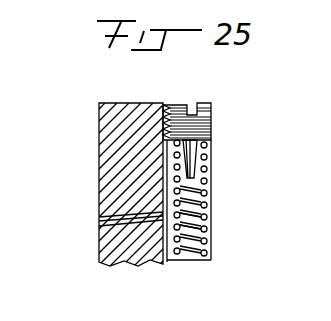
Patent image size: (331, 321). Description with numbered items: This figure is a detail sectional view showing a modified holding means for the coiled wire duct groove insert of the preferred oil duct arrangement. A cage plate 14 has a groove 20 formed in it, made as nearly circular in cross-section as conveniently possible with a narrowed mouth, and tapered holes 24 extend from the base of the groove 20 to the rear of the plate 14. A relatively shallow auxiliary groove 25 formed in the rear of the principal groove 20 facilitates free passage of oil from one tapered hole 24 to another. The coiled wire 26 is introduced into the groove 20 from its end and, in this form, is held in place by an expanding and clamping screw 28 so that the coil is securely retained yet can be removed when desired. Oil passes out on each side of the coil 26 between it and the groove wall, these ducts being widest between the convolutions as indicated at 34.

The cage plate 14 is at (117, 170).
The groove 20 is at (212, 190).
The tapered hole 24 is at (110, 230).
The auxiliary groove 25 is at (104, 193).
The coiled wire 26 is at (212, 216).
The expanding and clamping screw 28 is at (212, 125).
The widest duct portion 34 is at (212, 232).